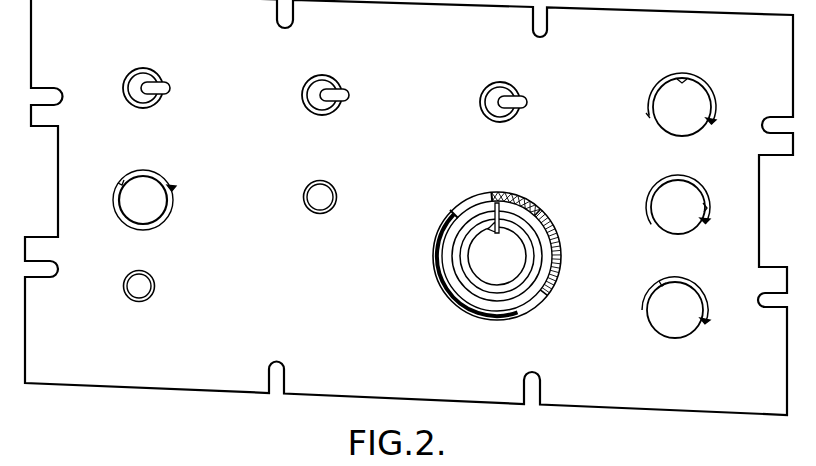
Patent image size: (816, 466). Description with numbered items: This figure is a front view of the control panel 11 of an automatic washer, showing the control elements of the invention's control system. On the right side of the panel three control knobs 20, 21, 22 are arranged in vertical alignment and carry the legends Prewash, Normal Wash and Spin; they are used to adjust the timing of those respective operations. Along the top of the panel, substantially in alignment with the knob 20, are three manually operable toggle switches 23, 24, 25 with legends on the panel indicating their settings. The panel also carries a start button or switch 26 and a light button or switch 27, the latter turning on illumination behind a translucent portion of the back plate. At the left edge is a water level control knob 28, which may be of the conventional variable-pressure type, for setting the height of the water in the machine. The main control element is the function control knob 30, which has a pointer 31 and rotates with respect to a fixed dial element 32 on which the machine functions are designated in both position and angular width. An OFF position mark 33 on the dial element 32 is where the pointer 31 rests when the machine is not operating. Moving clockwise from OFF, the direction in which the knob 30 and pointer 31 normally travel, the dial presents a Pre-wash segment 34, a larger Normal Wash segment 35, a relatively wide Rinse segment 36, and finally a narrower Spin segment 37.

The control panel 11 is at (752, 30).
The control knob 20 is at (692, 105).
The control knob 21 is at (684, 207).
The control knob 22 is at (680, 311).
The toggle switch 23 is at (148, 69).
The toggle switch 24 is at (330, 74).
The toggle switch 25 is at (505, 82).
The start button 26 is at (317, 193).
The light button 27 is at (140, 287).
The water level control knob 28 is at (143, 197).
The function control knob 30 is at (498, 252).
The pointer 31 is at (488, 224).
The dial element 32 is at (508, 319).
The OFF position mark 33 is at (511, 187).
The Pre-wash segment 34 is at (553, 213).
The Normal Wash segment 35 is at (555, 278).
The Rinse segment 36 is at (477, 312).
The Spin segment 37 is at (450, 210).